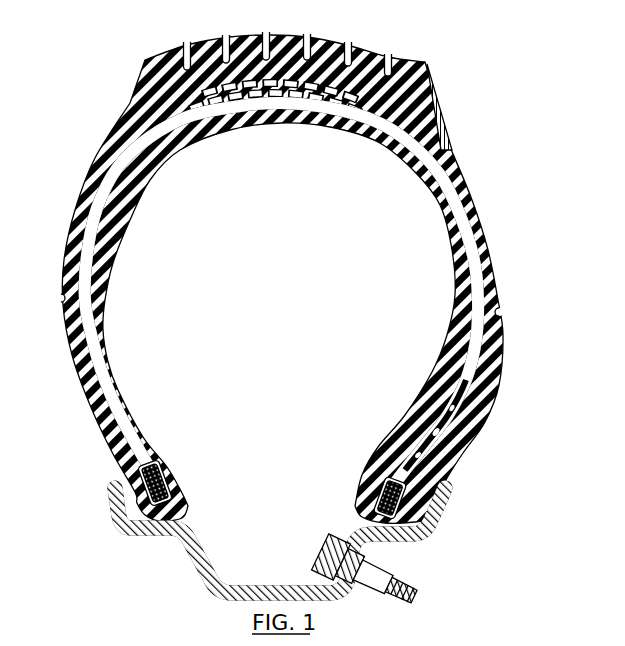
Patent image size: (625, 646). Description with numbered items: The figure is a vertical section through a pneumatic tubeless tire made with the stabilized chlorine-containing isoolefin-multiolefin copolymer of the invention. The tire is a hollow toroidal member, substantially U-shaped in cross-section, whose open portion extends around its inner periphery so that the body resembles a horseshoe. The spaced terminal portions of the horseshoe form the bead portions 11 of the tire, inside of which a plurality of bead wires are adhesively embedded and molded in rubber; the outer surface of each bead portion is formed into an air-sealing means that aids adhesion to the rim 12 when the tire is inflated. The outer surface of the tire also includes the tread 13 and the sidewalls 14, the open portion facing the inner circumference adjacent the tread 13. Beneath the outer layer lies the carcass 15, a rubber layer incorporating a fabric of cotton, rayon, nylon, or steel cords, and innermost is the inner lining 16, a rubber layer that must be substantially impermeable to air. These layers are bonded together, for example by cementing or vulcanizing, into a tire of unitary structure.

The bead portions 11 is at (184, 477).
The rim 12 is at (277, 586).
The tread 13 is at (329, 48).
The sidewalls 14 is at (477, 414).
The carcass 15 is at (96, 303).
The inner lining 16 is at (448, 373).